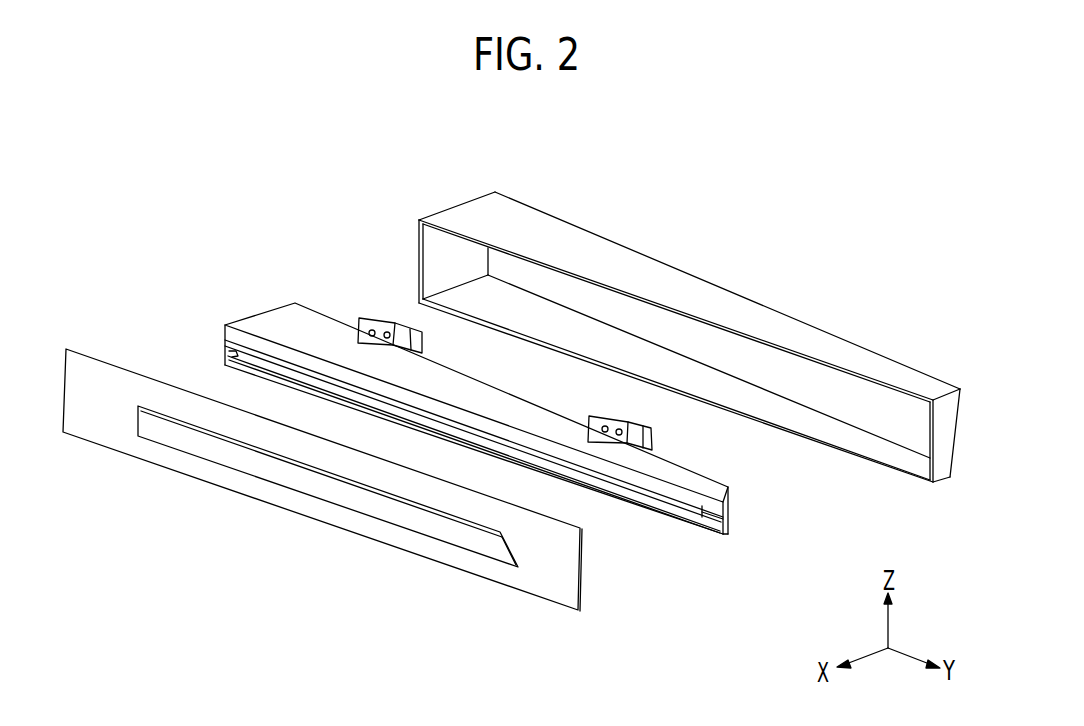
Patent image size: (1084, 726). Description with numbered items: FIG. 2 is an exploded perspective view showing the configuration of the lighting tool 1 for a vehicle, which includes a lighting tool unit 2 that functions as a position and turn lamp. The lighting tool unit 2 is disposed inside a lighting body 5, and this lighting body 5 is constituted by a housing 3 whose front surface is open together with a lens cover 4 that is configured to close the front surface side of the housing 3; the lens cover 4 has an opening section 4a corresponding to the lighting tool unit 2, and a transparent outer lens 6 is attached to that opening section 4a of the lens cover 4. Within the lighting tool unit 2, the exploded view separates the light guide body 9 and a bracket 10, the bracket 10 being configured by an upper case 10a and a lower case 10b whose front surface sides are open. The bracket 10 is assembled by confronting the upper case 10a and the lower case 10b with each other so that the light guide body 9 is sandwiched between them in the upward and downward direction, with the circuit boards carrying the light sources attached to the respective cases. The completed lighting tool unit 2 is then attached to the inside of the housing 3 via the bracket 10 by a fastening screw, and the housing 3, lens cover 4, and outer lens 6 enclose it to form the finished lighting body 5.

The lighting tool for a vehicle 1 is at (86, 178).
The lighting tool unit 2 is at (285, 280).
The housing 3 is at (456, 205).
The lens cover 4 is at (63, 373).
The opening section 4a is at (180, 438).
The lighting body 5 is at (502, 364).
The outer lens 6 is at (363, 500).
The light guide body 9 is at (615, 480).
The bracket 10 is at (250, 220).
The upper case 10a is at (253, 316).
The lower case 10b is at (225, 345).